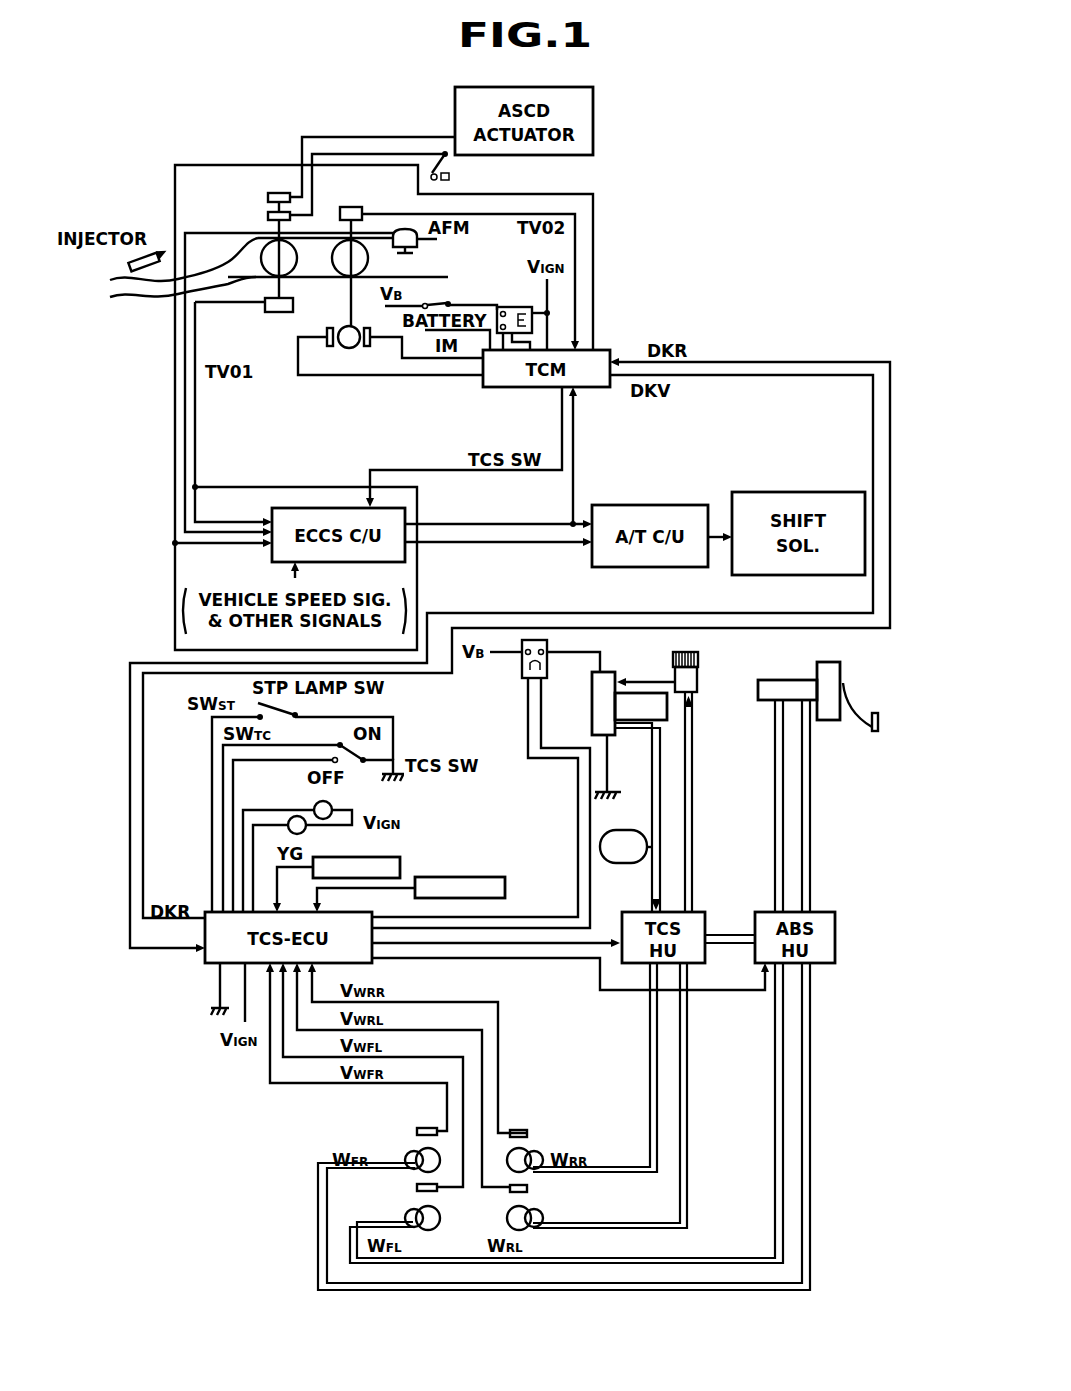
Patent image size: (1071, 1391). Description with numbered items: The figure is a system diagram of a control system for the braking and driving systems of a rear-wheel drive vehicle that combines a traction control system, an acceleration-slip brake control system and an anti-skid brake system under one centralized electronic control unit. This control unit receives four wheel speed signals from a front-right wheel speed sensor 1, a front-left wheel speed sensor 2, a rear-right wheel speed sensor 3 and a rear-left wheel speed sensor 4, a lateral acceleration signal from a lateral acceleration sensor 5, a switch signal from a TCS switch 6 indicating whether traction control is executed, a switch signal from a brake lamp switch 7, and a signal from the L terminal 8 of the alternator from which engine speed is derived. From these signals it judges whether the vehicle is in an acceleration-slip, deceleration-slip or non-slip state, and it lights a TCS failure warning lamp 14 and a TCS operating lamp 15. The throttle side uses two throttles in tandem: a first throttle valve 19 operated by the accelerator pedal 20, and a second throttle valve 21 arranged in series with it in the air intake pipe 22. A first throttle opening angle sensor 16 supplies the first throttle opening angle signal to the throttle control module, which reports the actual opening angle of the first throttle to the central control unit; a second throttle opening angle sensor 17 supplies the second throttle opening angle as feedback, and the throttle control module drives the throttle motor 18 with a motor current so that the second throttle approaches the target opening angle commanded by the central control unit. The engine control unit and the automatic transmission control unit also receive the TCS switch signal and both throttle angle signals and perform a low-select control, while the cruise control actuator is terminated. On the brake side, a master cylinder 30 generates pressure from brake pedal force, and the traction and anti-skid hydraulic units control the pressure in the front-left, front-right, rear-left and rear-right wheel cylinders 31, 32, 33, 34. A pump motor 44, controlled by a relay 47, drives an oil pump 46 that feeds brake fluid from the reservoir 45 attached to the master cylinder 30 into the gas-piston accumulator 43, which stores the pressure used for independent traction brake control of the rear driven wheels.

The front-right wheel speed sensor 1 is at (420, 1128).
The front-left wheel speed sensor 2 is at (417, 1187).
The rear-right wheel speed sensor 3 is at (518, 1130).
The rear-left wheel speed sensor 4 is at (527, 1188).
The lateral acceleration sensor 5 is at (400, 858).
The TCS switch 6 is at (394, 757).
The brake lamp switch 7 is at (298, 716).
The L terminal of an alternator 8 is at (503, 877).
The TCS failure warning lamp 14 is at (316, 804).
The TCS operating lamp 15 is at (290, 829).
The first throttle opening angle sensor 16 is at (303, 290).
The second throttle opening angle sensor 17 is at (358, 207).
The throttle motor 18 is at (359, 347).
The first throttle valve 19 is at (267, 246).
The accelerator pedal 20 is at (450, 176).
The second throttle valve 21 is at (353, 278).
The air intake pipe 22 is at (247, 276).
The master cylinder 30 is at (783, 680).
The front-left wheel cylinder 31 is at (424, 1229).
The front-right wheel cylinder 32 is at (416, 1150).
The rear-left wheel cylinder 33 is at (527, 1229).
The rear-right wheel cylinder 34 is at (532, 1150).
The double sealed gas-piston accumulator 43 is at (622, 864).
The pump motor 44 is at (592, 720).
The reservoir 45 is at (673, 658).
The oil pump 46 is at (667, 712).
The relay 47 is at (547, 670).